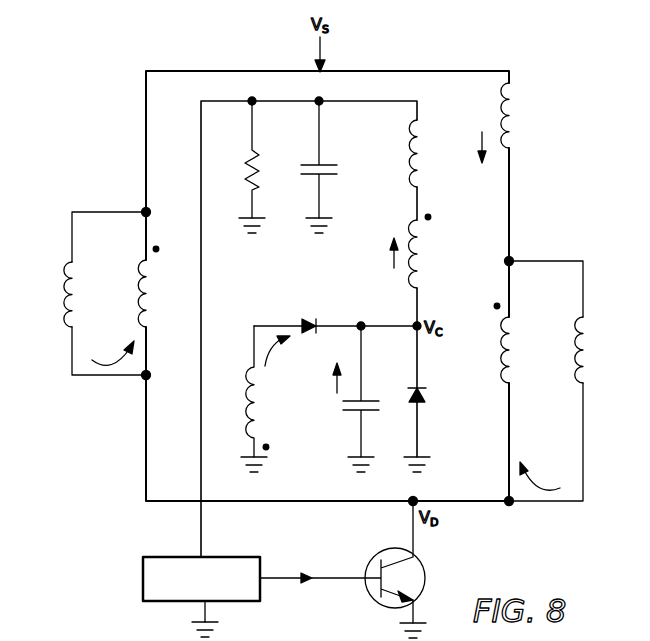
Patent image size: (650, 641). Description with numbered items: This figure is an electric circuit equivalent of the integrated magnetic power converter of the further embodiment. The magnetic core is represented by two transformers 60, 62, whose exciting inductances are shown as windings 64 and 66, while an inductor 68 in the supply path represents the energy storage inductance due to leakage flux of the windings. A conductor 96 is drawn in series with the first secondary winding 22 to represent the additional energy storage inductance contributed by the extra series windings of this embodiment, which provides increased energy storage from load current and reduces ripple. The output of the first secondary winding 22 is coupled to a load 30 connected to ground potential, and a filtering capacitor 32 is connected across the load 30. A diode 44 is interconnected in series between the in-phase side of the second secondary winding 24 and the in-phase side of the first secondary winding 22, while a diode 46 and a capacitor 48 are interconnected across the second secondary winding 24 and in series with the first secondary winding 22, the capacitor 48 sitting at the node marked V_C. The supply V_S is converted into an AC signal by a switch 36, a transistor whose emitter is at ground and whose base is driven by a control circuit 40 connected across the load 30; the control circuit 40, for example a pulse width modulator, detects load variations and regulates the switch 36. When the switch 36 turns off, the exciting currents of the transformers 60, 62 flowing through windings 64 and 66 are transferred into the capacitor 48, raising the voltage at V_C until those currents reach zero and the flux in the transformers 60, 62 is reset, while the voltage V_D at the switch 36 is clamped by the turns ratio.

The first secondary winding 22 is at (416, 254).
The second secondary winding 24 is at (258, 403).
The load 30 is at (262, 161).
The filtering capacitor 32 is at (325, 162).
The switch 36 is at (418, 578).
The control circuit 40 is at (246, 590).
The diode 44 is at (306, 318).
The diode 46 is at (426, 397).
The capacitor 48 is at (365, 400).
The transformer 60 is at (121, 262).
The transformer 62 is at (554, 320).
The winding 64 is at (63, 296).
The winding 66 is at (580, 362).
The inductor 68 is at (503, 126).
The conductor 96 is at (414, 148).